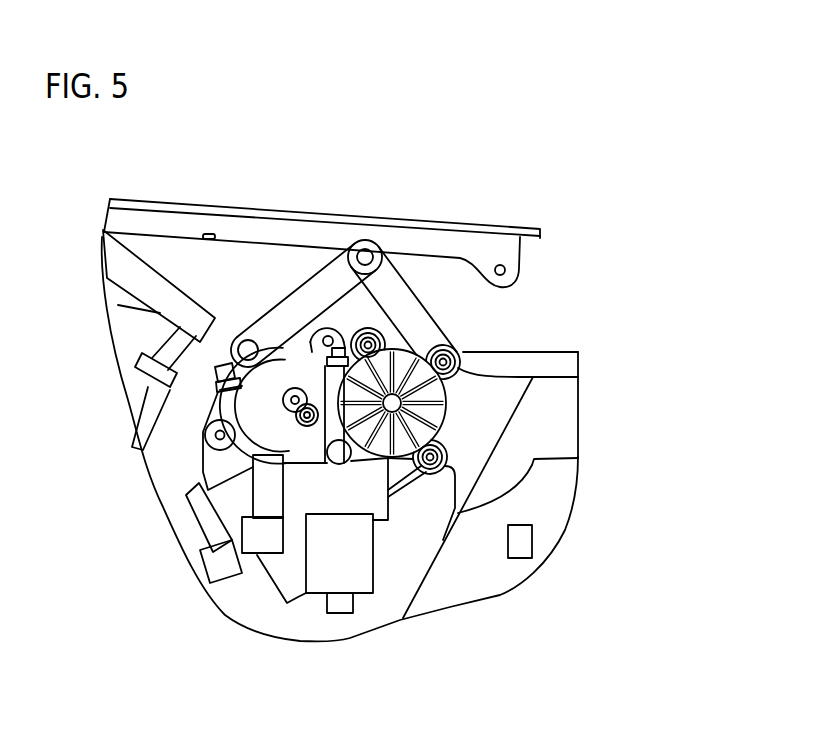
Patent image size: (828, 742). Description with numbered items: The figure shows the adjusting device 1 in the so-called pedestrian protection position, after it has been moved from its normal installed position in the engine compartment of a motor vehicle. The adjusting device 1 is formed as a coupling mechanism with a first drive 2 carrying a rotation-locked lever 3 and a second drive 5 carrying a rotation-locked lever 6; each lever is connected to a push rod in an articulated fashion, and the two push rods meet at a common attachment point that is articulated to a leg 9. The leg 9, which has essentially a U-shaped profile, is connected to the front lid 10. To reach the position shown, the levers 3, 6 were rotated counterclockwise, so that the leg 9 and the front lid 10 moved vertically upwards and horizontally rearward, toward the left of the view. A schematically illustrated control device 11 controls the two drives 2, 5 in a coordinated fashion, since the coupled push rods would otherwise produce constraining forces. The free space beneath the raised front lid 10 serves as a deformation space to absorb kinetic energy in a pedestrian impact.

The adjusting device 1 is at (640, 423).
The first drive 2 is at (220, 465).
The rotation-locked lever 3 is at (270, 388).
The second drive 5 is at (355, 568).
The rotation-locked lever 6 is at (463, 355).
The leg 9 is at (458, 247).
The front lid 10 is at (244, 213).
The control device 11 is at (532, 538).